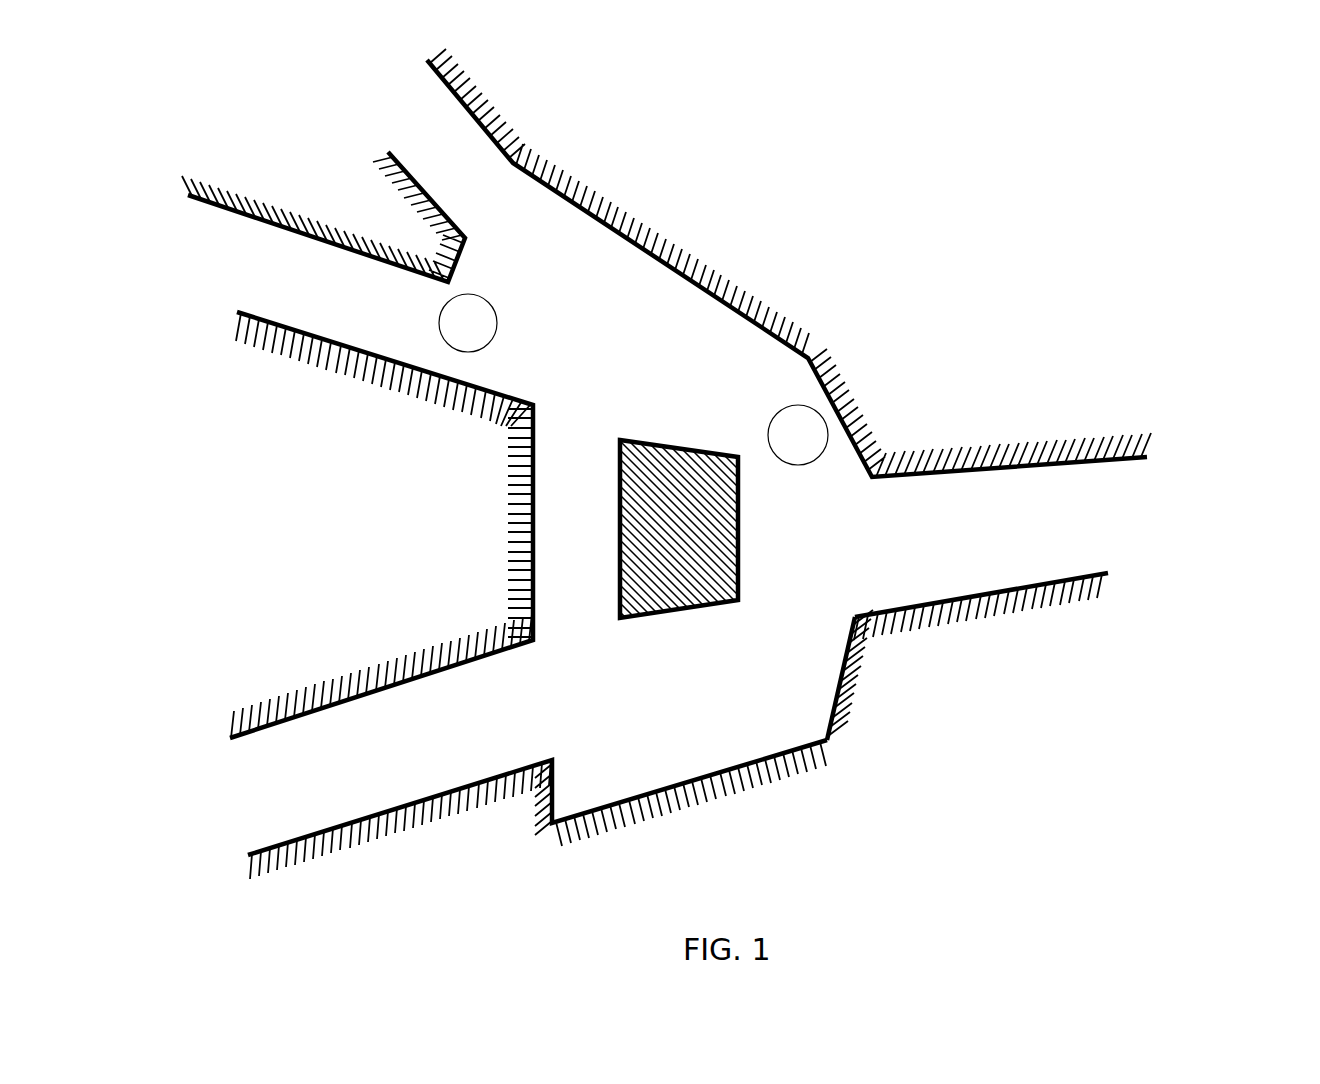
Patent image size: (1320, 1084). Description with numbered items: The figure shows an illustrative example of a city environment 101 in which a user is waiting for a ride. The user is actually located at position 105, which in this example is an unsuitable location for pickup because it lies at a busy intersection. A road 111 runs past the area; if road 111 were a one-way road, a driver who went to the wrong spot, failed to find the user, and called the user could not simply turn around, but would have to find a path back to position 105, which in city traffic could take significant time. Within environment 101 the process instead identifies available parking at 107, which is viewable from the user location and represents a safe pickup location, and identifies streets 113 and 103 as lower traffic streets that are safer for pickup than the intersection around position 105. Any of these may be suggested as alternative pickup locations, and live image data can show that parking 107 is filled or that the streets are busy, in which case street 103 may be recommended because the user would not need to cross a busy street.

The city environment 101 is at (911, 244).
The street 103 is at (1113, 515).
The position 105 is at (798, 435).
The parking 107 is at (467, 323).
The road 111 is at (615, 302).
The street 113 is at (345, 792).